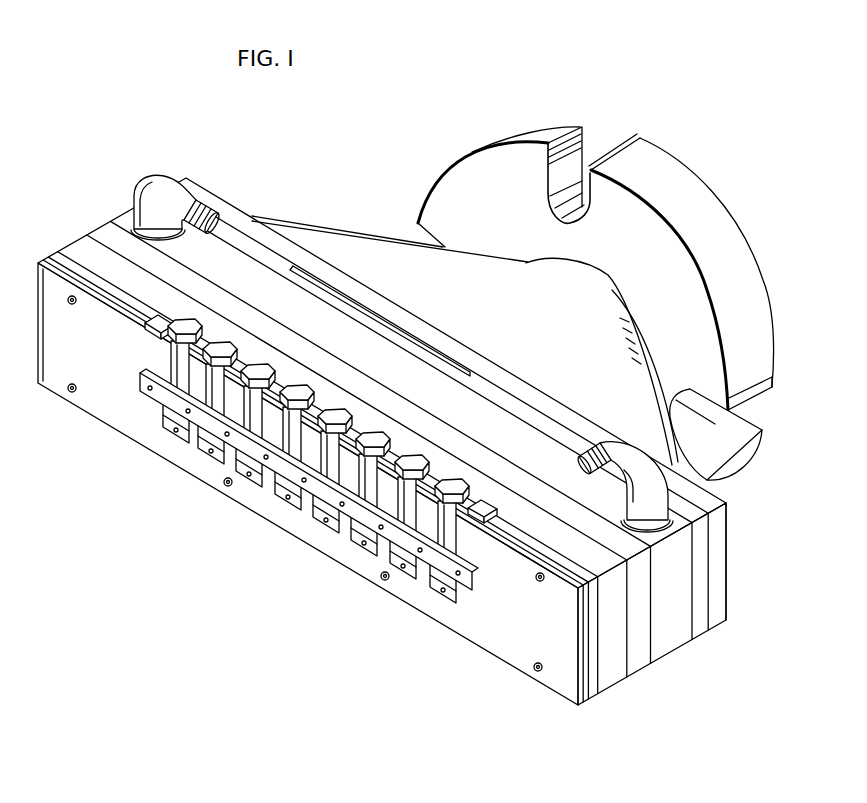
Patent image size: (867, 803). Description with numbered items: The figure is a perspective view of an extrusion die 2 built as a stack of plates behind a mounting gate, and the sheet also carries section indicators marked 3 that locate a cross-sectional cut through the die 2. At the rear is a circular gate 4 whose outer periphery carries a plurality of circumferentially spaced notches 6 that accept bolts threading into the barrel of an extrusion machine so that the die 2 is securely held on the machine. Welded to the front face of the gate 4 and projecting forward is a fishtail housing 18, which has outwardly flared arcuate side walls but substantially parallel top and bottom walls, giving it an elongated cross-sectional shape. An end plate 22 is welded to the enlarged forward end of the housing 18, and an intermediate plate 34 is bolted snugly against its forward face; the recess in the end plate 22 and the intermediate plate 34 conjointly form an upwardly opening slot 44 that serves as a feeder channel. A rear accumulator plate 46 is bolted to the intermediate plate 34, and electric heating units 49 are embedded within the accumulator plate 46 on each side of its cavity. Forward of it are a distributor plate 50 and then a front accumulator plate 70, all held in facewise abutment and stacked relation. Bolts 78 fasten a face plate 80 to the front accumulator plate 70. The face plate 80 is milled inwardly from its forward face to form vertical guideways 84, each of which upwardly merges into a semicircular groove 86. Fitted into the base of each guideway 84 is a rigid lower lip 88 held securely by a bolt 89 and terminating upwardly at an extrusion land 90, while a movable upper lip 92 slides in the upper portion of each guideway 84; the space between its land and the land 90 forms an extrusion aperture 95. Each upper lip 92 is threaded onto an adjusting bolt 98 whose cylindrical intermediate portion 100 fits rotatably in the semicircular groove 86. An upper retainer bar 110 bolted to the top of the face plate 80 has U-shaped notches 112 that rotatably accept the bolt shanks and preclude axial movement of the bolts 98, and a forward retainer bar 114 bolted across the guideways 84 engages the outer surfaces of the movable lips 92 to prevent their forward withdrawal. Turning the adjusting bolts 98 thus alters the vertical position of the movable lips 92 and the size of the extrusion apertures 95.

The extrusion die 2 is at (241, 128).
The section line 3- 3 is at (472, 15).
The circular gate 4 is at (549, 140).
The notches 6 is at (592, 142).
The fishtail housing 18 is at (368, 239).
The end plate 22 is at (728, 624).
The intermediate plate 34 is at (708, 636).
The upwardly opening slot 44 is at (306, 265).
The rear accumulator plate 46 is at (691, 645).
The electric heating units 49 is at (150, 180).
The distributor plate 50 is at (649, 669).
The front accumulator plate 70 is at (627, 685).
The bolts 78 is at (541, 673).
The face plate 80 is at (586, 699).
The vertical guideways 84 is at (444, 586).
The semicircular groove 86 is at (458, 534).
The lower lip 88 is at (414, 580).
The bolt 89 is at (326, 522).
The extrusion land 90 is at (403, 568).
The movable upper lip 92 is at (290, 486).
The extrusion aperture 95 is at (212, 452).
The adjusting bolt 98 is at (183, 322).
The cylindrical intermediate portion 100 is at (170, 357).
The upper retainer bar 110 is at (498, 510).
The U-shaped notches 112 is at (145, 333).
The forward retainer bar 114 is at (140, 383).